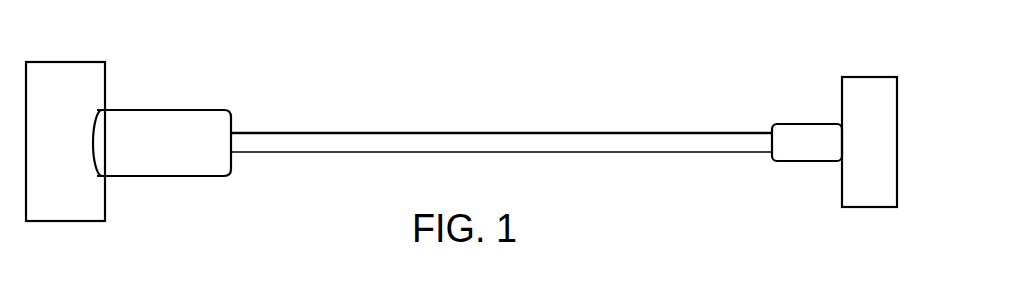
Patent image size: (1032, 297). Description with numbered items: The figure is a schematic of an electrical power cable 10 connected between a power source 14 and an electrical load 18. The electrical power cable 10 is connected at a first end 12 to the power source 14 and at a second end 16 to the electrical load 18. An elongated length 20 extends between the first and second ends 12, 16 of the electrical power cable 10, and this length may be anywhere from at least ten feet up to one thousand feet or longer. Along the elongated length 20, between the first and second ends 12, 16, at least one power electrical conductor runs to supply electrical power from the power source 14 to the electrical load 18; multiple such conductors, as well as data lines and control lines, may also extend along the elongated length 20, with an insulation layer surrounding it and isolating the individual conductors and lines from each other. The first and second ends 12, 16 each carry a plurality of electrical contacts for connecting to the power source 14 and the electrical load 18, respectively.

The electrical power cable 10 is at (412, 41).
The first end 12 is at (800, 124).
The power source 14 is at (865, 77).
The second end 16 is at (168, 110).
The electrical load 18 is at (65, 62).
The elongated length 20 is at (455, 133).